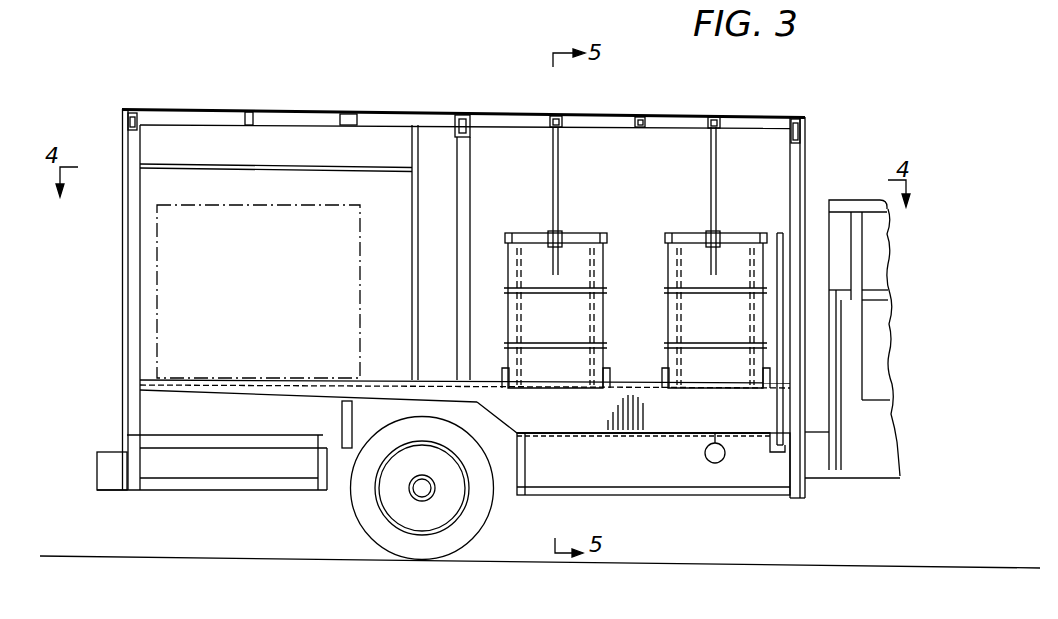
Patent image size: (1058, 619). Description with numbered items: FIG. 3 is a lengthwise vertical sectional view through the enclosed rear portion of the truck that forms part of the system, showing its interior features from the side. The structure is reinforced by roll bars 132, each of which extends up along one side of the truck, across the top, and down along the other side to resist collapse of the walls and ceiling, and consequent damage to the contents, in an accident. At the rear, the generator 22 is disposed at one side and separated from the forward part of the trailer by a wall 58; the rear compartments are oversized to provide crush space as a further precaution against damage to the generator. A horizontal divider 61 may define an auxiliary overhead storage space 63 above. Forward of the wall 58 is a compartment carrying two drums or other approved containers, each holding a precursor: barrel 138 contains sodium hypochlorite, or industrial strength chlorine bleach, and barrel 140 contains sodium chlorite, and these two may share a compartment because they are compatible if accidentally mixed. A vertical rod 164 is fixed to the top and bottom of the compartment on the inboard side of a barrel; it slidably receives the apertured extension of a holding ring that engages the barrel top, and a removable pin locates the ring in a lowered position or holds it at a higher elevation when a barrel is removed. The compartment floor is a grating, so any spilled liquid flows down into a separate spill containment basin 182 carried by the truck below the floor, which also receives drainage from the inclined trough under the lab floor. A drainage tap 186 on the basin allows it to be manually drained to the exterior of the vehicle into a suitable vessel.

The generator 22 is at (157, 315).
The wall 58 is at (418, 157).
The horizontal divider 61 is at (263, 163).
The auxiliary overhead storage space 63 is at (191, 137).
The roll bar 132 is at (132, 112).
The barrel 138 is at (607, 262).
The barrel 140 is at (667, 316).
The vertical rod 164 is at (562, 178).
The spill containment basin 182 is at (765, 413).
The drainage tap 186 is at (723, 462).